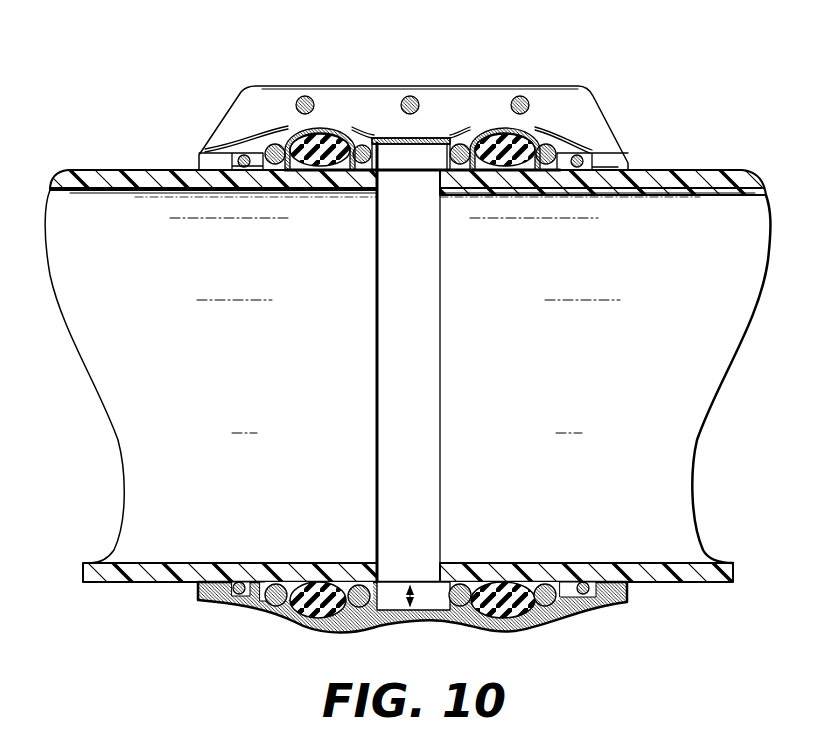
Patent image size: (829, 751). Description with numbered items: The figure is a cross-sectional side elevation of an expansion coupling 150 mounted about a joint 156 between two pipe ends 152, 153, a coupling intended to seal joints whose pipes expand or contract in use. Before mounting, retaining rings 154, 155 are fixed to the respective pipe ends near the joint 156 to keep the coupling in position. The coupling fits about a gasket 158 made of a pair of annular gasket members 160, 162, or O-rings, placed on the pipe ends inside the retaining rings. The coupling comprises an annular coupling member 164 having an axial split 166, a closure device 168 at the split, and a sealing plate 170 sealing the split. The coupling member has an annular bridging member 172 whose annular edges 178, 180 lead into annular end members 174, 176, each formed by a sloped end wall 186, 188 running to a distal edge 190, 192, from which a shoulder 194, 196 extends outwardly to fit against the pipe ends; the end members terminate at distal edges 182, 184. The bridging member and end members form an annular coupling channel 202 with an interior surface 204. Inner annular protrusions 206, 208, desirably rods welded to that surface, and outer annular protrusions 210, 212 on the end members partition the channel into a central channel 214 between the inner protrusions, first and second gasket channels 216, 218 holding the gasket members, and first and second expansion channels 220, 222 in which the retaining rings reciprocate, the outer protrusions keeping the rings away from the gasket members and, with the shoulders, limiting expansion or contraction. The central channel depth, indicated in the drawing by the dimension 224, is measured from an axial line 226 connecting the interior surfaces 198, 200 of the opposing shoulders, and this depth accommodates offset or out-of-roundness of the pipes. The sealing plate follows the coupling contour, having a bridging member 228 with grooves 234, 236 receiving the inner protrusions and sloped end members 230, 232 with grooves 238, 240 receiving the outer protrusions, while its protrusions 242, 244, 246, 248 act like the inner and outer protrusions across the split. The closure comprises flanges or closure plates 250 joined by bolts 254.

The expansion coupling 150 is at (586, 88).
The pipe end 152 is at (250, 391).
The pipe end 153 is at (597, 391).
The retaining ring 154 is at (242, 170).
The retaining ring 155 is at (573, 172).
The joint 156 is at (444, 430).
The gasket 158 is at (333, 180).
The annular gasket member 160 is at (302, 170).
The annular gasket member 162 is at (490, 170).
The annular coupling member 164 is at (427, 123).
The axial split 166 is at (195, 157).
The closure device 168 is at (248, 88).
The sealing plate 170 is at (381, 133).
The annular bridging member 172 is at (395, 137).
The annular end member 174 is at (272, 615).
The annular end member 176 is at (555, 618).
The annular edge 178 is at (292, 128).
The annular edge 180 is at (545, 128).
The distal edge 182 is at (207, 165).
The distal edge 184 is at (630, 163).
The sloped end wall 186 is at (244, 148).
The sloped end wall 188 is at (598, 140).
The distal edge 190 is at (220, 152).
The distal edge 192 is at (614, 150).
The shoulder 194 is at (207, 174).
The shoulder 196 is at (617, 174).
The interior surface 198 is at (220, 583).
The interior surface 200 is at (605, 583).
The annular coupling channel 202 is at (420, 624).
The interior surface 204 is at (385, 598).
The inner annular protrusion 206 is at (360, 145).
The inner annular protrusion 208 is at (461, 145).
The outer annular protrusion 210 is at (275, 145).
The outer annular protrusion 212 is at (546, 145).
The central channel 214 is at (347, 170).
The first gasket channel 216 is at (300, 180).
The second gasket channel 218 is at (472, 180).
The first expansion channel 220 is at (256, 175).
The second expansion channel 222 is at (589, 180).
The recess depth 224 is at (414, 597).
The axial line 226 is at (448, 580).
The bridging member 228 is at (411, 154).
The end member 230 is at (308, 118).
The end member 232 is at (514, 118).
The groove 234 is at (353, 92).
The groove 236 is at (468, 92).
The groove 238 is at (277, 142).
The groove 240 is at (547, 142).
The protrusion 242 is at (382, 162).
The protrusion 244 is at (426, 174).
The protrusion 246 is at (272, 174).
The protrusion 248 is at (552, 174).
The closure plate 250 is at (455, 85).
The bolt 254 is at (304, 96).